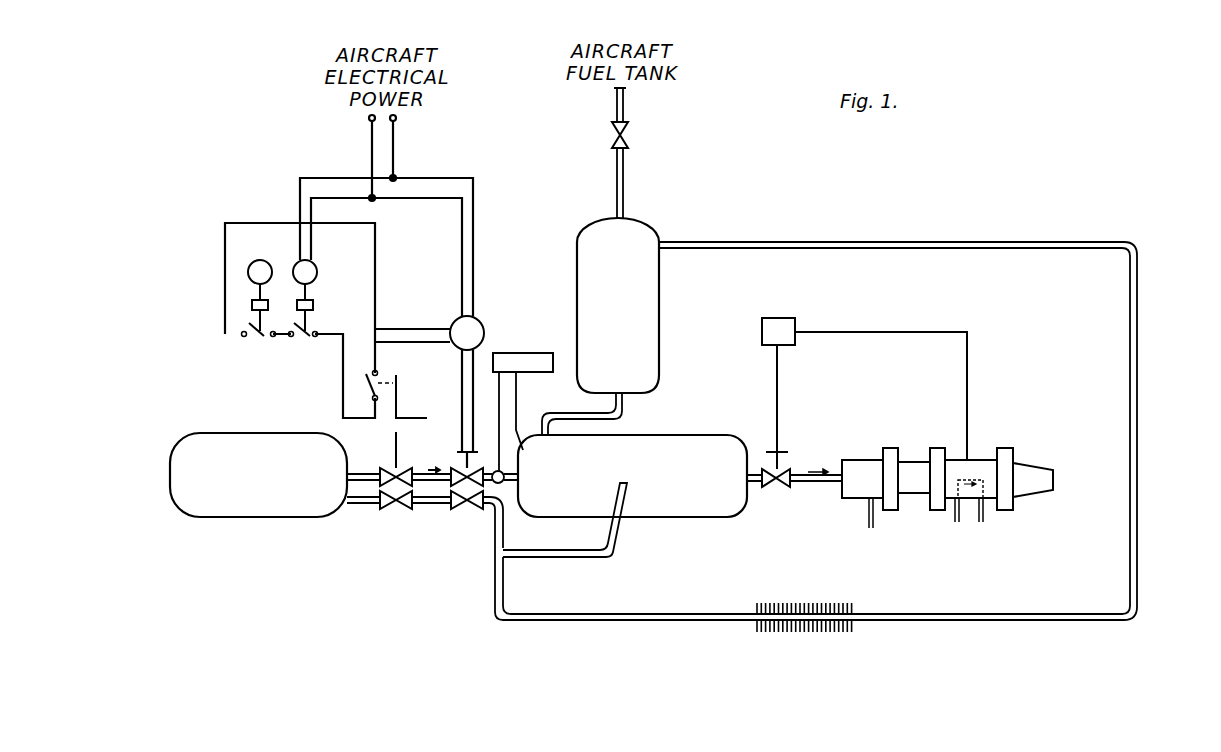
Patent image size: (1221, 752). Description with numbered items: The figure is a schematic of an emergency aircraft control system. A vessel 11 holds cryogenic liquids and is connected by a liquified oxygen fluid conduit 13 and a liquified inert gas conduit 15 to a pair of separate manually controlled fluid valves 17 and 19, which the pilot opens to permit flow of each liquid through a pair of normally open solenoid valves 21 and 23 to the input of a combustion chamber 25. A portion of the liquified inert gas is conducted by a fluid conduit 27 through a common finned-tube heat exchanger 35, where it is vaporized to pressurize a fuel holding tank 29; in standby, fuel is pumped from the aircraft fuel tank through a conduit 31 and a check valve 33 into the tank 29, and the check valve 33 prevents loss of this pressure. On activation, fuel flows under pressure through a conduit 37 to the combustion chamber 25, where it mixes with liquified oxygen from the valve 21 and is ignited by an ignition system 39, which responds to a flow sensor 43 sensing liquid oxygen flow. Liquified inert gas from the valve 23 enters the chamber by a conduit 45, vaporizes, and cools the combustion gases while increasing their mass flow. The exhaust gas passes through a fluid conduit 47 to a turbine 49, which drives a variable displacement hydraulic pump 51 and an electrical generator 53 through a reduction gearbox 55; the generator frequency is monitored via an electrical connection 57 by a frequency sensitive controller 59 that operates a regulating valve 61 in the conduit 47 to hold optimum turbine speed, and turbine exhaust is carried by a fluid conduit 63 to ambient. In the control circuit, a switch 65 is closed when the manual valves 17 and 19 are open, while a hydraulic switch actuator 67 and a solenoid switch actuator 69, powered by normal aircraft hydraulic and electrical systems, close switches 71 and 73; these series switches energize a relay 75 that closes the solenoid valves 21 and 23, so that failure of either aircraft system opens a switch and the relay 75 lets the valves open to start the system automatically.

The vessel 11 is at (221, 417).
The liquified oxygen fluid conduit 13 is at (361, 474).
The liquified inert gas conduit 15 is at (362, 503).
The manually controlled fluid valve 17 is at (398, 467).
The manually controlled fluid valve 19 is at (398, 510).
The normally open solenoid valve 21 is at (476, 470).
The normally open solenoid valve 23 is at (470, 510).
The combustion chamber 25 is at (667, 517).
The fluid conduit 27 is at (603, 613).
The fuel holding tank 29 is at (659, 295).
The conduit 31 is at (624, 104).
The check valve 33 is at (629, 145).
The finned-tube heat exchanger 35 is at (800, 603).
The conduit 37 is at (578, 413).
The ignition system 39 is at (516, 353).
The flow sensor 43 is at (500, 483).
The conduit 45 is at (556, 550).
The fluid conduit 47 is at (822, 482).
The turbine 49 is at (858, 460).
The variable displacement hydraulic pump 51 is at (1036, 465).
The electrical generator 53 is at (957, 515).
The reduction gearbox 55 is at (914, 462).
The electrical connection 57 is at (967, 383).
The frequency sensitive controller 59 is at (781, 318).
The regulating valve 61 is at (776, 488).
The fluid conduit 63 is at (868, 520).
The switch 65 is at (367, 376).
The hydraulic switch actuator 67 is at (263, 260).
The solenoid switch actuator 69 is at (312, 262).
The switch 71 is at (254, 337).
The switch 73 is at (305, 337).
The relay 75 is at (479, 322).